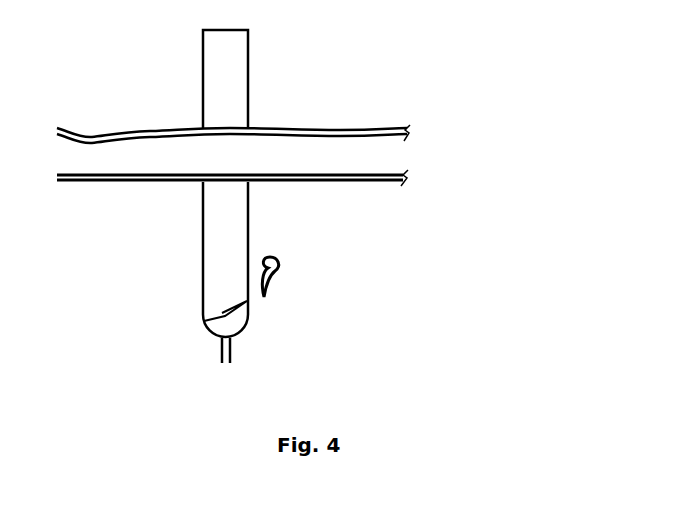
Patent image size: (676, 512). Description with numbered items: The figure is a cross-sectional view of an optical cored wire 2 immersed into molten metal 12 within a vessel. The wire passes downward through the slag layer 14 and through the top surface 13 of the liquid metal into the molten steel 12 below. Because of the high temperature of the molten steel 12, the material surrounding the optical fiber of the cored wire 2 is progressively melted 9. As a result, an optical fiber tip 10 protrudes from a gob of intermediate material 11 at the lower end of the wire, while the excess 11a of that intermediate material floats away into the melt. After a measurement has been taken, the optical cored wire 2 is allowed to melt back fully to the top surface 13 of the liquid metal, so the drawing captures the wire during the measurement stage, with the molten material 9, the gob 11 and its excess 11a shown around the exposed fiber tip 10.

The optical cored wire 2 is at (184, 54).
The progressively melted material 9 is at (225, 306).
The optical fiber tip 10 is at (231, 352).
The gob of intermediate material 11 is at (243, 312).
The excess of intermediate material 11a is at (280, 268).
The molten metal 12 is at (377, 207).
The top surface of the liquid metal 13 is at (402, 177).
The slag layer 14 is at (402, 153).